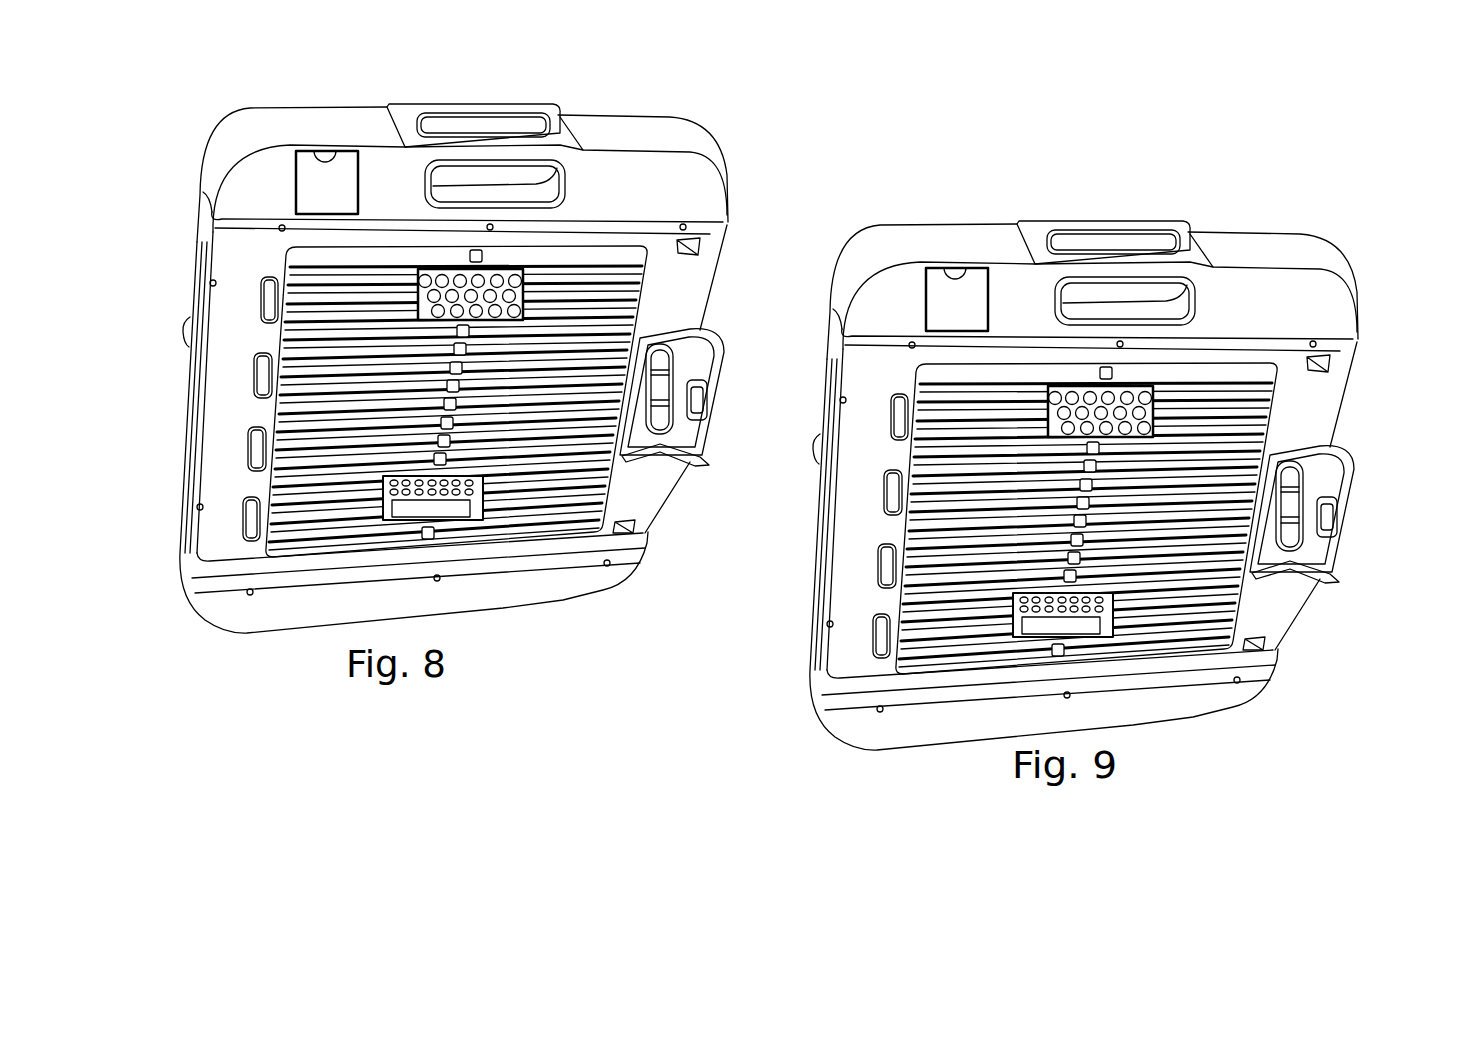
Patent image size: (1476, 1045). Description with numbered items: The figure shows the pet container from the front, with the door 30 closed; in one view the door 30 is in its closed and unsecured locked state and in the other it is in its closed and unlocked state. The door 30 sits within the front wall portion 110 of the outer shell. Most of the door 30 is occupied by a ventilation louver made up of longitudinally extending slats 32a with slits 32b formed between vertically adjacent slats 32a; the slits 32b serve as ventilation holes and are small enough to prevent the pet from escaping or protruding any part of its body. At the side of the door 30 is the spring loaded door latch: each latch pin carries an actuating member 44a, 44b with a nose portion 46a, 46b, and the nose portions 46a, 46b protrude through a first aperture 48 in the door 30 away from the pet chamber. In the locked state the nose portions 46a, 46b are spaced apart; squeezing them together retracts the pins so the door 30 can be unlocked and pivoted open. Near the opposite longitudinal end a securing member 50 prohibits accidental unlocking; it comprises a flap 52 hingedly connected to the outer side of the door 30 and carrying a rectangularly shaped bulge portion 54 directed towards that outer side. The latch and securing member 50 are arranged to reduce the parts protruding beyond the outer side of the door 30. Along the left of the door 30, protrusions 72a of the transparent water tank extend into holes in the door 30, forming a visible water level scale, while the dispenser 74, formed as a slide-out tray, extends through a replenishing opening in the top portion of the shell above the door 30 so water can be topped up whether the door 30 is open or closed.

In FIG. 8, the door 30 is at (207, 528).
In FIG. 9, the door 30 is at (1013, 549).
In FIG. 8, the slats 32a is at (633, 290).
In FIG. 8, the slits 32b is at (307, 292).
In FIG. 9, the actuating member 44a is at (1346, 495).
In FIG. 9, the actuating member 44b is at (1308, 595).
In FIG. 8, the nose portion 46a is at (668, 368).
In FIG. 8, the nose portion 46b is at (700, 392).
In FIG. 9, the first aperture 48 is at (1302, 560).
In FIG. 8, the securing member 50 is at (693, 453).
In FIG. 9, the flap 52 is at (1353, 536).
In FIG. 8, the bulge portion 54 is at (670, 447).
In FIG. 8, the protrusions 72a is at (264, 375).
In FIG. 9, the protrusions 72a is at (831, 434).
In FIG. 8, the dispenser 74 is at (322, 150).
In FIG. 8, the front wall portion 110 is at (695, 272).
In FIG. 9, the front wall portion 110 is at (1353, 477).